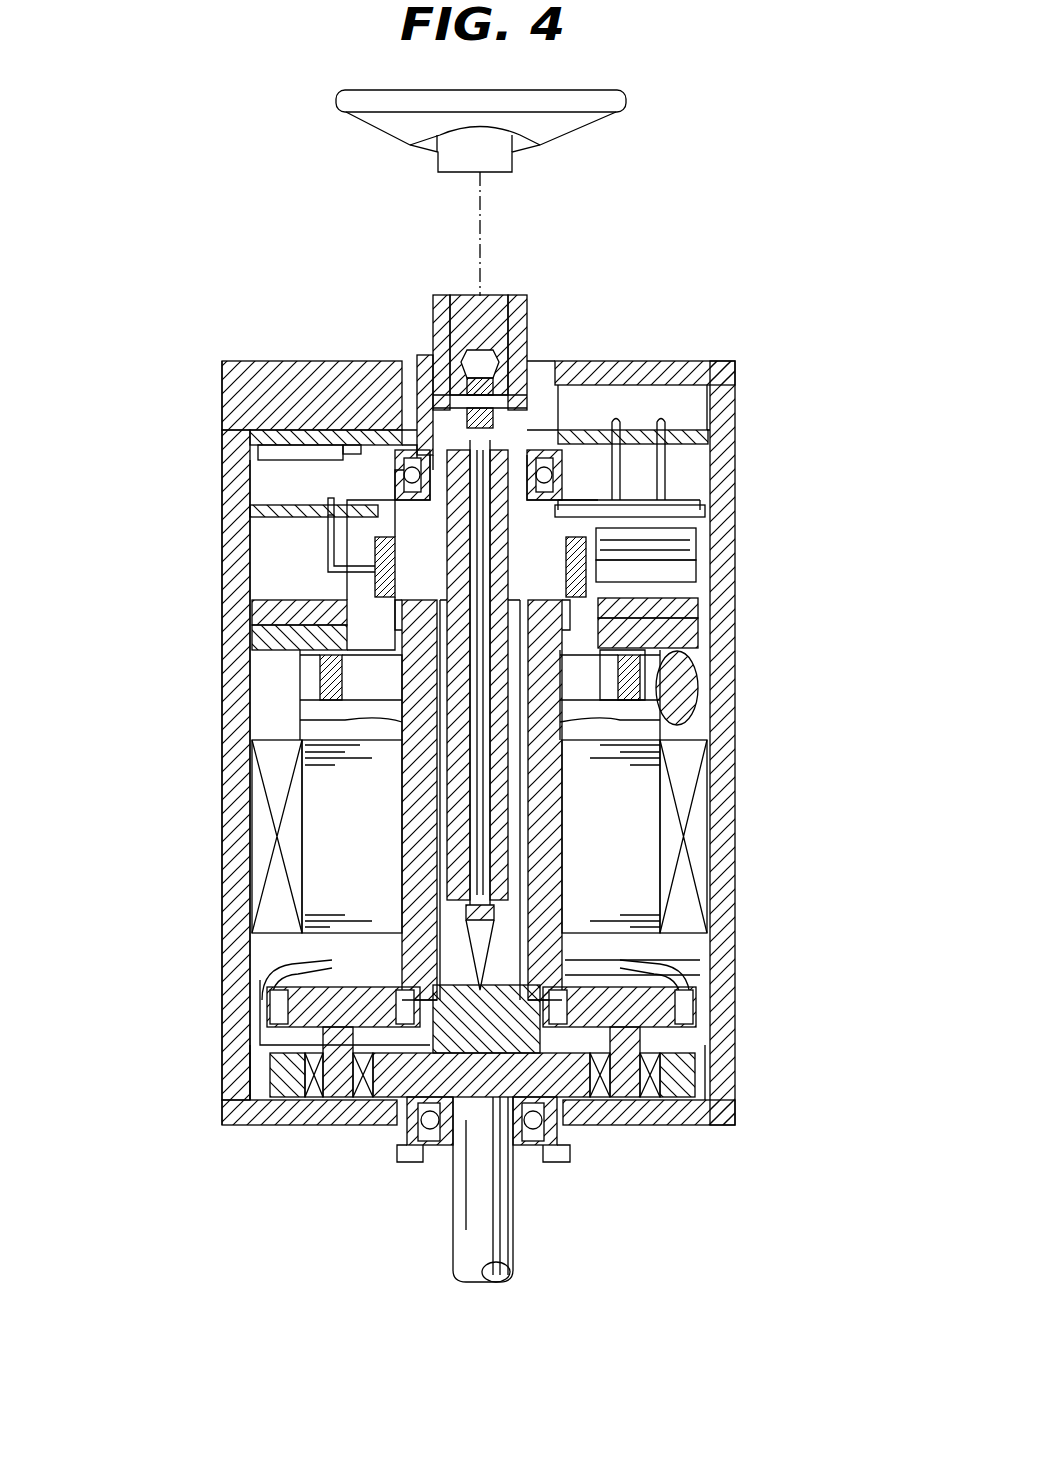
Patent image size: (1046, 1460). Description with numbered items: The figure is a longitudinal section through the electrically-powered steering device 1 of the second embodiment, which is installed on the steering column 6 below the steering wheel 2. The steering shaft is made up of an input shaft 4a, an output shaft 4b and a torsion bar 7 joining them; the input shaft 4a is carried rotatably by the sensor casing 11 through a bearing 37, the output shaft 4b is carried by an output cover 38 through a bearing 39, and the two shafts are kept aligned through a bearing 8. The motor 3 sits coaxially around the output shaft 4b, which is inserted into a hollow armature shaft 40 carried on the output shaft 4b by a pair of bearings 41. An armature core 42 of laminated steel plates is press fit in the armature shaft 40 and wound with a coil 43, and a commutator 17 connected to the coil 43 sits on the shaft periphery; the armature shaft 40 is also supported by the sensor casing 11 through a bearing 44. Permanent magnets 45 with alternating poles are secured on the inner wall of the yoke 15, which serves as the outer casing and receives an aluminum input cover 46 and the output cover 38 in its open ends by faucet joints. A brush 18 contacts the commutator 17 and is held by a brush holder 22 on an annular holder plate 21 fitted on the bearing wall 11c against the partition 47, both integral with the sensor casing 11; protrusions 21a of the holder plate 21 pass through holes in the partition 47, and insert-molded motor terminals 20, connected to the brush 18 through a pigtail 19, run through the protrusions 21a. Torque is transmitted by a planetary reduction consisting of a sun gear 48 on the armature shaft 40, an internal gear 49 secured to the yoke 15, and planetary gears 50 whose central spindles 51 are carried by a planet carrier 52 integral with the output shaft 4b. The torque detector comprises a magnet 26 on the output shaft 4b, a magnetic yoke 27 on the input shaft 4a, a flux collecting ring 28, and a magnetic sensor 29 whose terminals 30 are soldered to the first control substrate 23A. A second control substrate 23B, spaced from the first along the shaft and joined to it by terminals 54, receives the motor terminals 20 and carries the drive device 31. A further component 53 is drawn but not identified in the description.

The electrically-powered steering device 1 is at (692, 340).
The steering wheel 2 is at (590, 96).
The motor 3 is at (222, 905).
The input shaft 4a is at (505, 298).
The output shaft 4b is at (490, 1250).
The steering column 6 is at (440, 297).
The torsion bar 7 is at (490, 822).
The bearing 8 is at (420, 400).
The sensor casing 11 is at (598, 540).
The bearing wall 11c is at (265, 640).
The yoke 15 is at (722, 858).
The commutator 17 is at (318, 672).
The brush 18 is at (325, 690).
The pigtail 19 is at (692, 685).
The motor terminals 20 is at (700, 512).
The holder plate 21 is at (628, 632).
The protrusions 21a is at (620, 610).
The brush holder 22 is at (655, 742).
The first control substrate 23A is at (250, 511).
The second control substrate 23B is at (690, 430).
The magnet 26 is at (680, 498).
The magnetic yoke 27 is at (598, 567).
The flux collecting ring 28 is at (588, 600).
The magnetic sensor 29 is at (330, 548).
The terminals 30 is at (330, 500).
The drive device 31 is at (283, 450).
The bearing 37 is at (550, 455).
The output cover 38 is at (670, 1125).
The bearing 39 is at (538, 1158).
The armature shaft 40 is at (555, 790).
The bearings 41 is at (655, 705).
The armature core 42 is at (330, 862).
The coil 43 is at (330, 742).
The bearing 44 is at (345, 590).
The permanent magnets 45 is at (262, 803).
The input cover 46 is at (255, 365).
The partition 47 is at (265, 608).
The sun gear 48 is at (262, 987).
The internal gear 49 is at (255, 1030).
The planetary gears 50 is at (250, 1000).
The central spindle 51 is at (338, 1093).
The planet carrier 52 is at (383, 1090).
The yoke 53 is at (310, 1095).
The terminals 54 is at (615, 430).